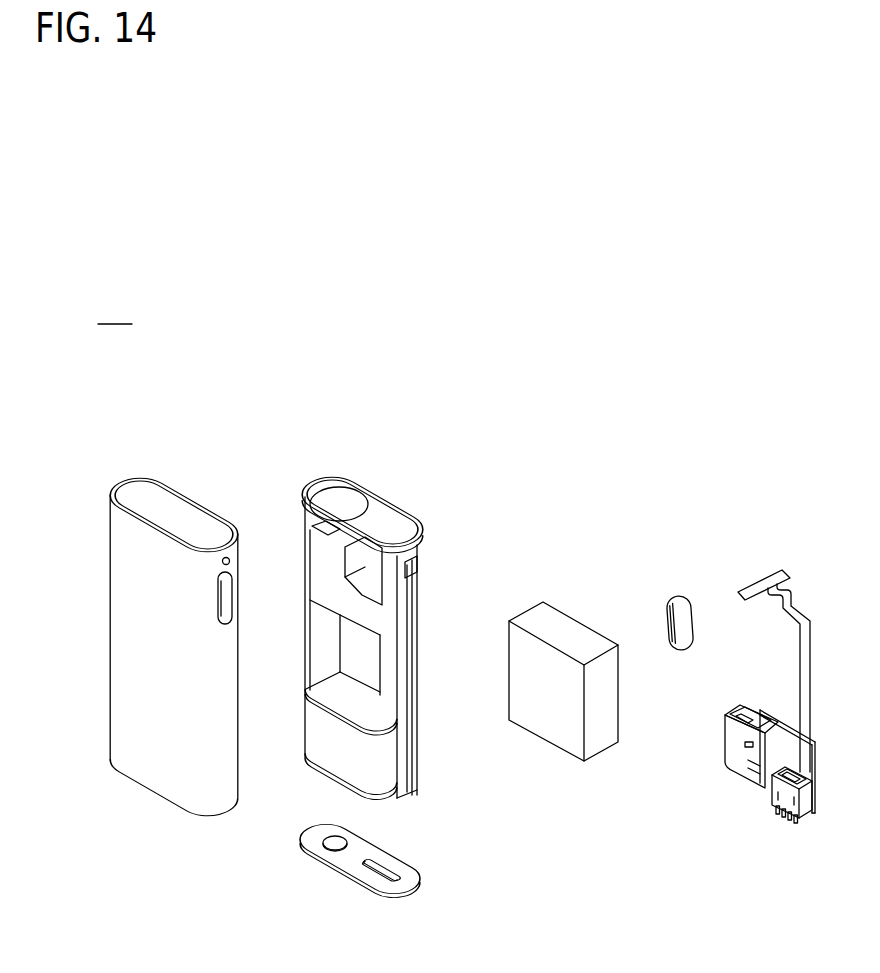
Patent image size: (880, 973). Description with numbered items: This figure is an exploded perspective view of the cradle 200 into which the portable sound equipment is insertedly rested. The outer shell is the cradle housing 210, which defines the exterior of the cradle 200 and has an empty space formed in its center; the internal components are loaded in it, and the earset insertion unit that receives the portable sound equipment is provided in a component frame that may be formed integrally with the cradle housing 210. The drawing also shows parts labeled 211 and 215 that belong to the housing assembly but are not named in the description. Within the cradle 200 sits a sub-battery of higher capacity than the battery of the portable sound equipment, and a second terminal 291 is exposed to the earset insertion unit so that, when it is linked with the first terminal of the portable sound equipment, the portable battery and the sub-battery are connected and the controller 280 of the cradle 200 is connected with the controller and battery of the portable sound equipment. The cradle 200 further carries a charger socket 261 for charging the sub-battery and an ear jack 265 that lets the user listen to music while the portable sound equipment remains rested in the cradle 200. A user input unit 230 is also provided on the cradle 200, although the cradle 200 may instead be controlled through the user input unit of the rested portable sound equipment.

The cradle 200 is at (535, 618).
The cradle housing 210 is at (340, 868).
The housing 211 is at (330, 760).
The cap 215 is at (332, 500).
The user input unit 230 is at (684, 633).
The charger socket 261 is at (808, 822).
The ear jack 265 is at (727, 764).
The controller 280 is at (783, 710).
The second terminal 291 is at (765, 580).